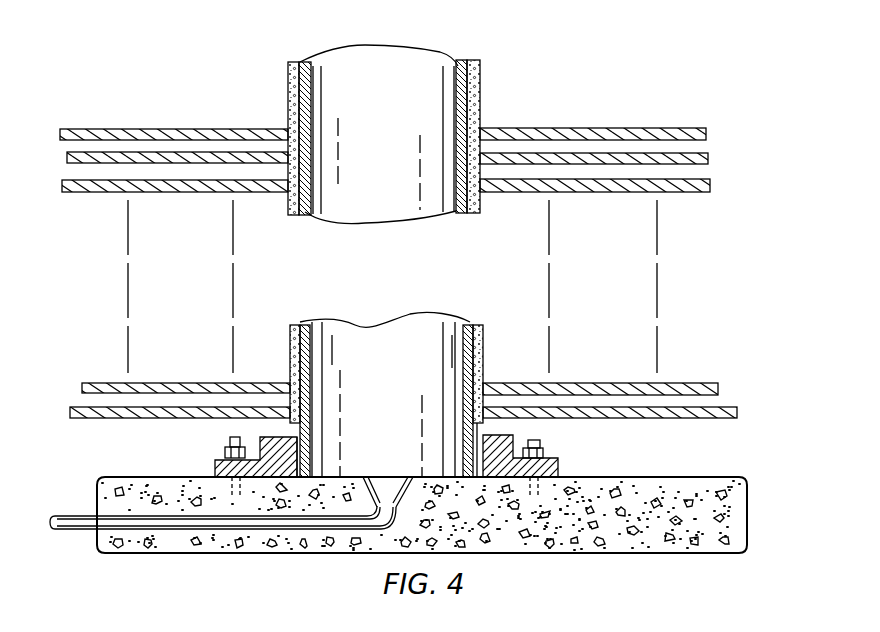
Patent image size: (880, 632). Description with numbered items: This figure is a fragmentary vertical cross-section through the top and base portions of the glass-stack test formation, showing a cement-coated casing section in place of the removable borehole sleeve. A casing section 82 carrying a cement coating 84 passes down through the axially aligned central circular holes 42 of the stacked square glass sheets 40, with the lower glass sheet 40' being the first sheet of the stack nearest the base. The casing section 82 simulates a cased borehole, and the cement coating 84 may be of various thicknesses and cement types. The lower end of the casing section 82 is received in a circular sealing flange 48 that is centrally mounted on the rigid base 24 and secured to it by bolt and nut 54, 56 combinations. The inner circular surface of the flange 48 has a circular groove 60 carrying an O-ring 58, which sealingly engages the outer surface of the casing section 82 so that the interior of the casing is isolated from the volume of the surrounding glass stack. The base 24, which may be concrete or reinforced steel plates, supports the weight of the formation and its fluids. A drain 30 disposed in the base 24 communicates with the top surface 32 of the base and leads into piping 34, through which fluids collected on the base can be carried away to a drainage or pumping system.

The rigid base 24 is at (740, 527).
The drain 30 is at (389, 490).
The top surface 32 is at (713, 477).
The piping 34 is at (117, 522).
The square glass sheets 40 is at (385, 132).
The lower glass sheet 40' is at (403, 374).
The central circular hole 42 is at (288, 378).
The circular sealing flange 48 is at (559, 463).
The bolt 54 is at (230, 438).
The nut 56 is at (223, 455).
The O-ring 58 is at (295, 453).
The circular groove 60 is at (298, 455).
The casing section 82 is at (340, 53).
The cement coating 84 is at (291, 212).